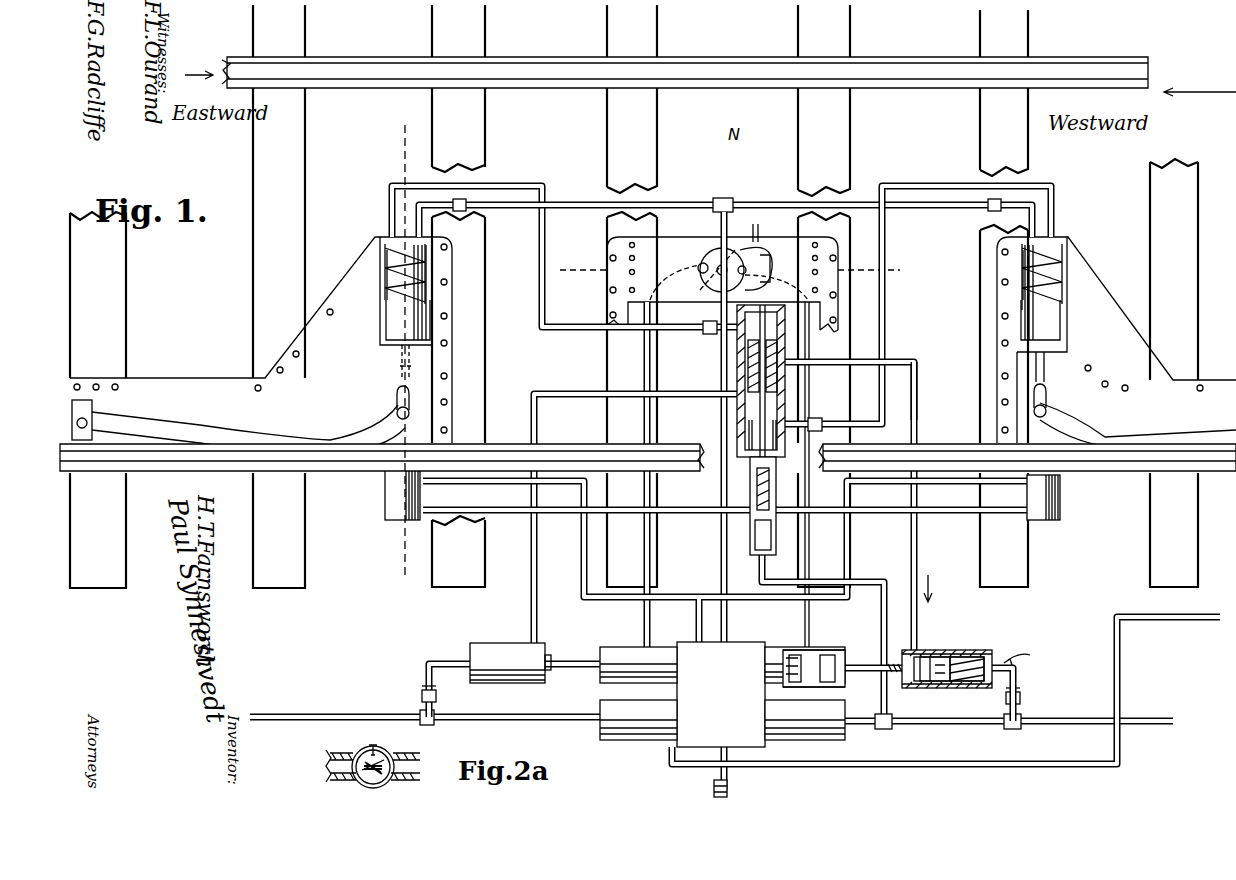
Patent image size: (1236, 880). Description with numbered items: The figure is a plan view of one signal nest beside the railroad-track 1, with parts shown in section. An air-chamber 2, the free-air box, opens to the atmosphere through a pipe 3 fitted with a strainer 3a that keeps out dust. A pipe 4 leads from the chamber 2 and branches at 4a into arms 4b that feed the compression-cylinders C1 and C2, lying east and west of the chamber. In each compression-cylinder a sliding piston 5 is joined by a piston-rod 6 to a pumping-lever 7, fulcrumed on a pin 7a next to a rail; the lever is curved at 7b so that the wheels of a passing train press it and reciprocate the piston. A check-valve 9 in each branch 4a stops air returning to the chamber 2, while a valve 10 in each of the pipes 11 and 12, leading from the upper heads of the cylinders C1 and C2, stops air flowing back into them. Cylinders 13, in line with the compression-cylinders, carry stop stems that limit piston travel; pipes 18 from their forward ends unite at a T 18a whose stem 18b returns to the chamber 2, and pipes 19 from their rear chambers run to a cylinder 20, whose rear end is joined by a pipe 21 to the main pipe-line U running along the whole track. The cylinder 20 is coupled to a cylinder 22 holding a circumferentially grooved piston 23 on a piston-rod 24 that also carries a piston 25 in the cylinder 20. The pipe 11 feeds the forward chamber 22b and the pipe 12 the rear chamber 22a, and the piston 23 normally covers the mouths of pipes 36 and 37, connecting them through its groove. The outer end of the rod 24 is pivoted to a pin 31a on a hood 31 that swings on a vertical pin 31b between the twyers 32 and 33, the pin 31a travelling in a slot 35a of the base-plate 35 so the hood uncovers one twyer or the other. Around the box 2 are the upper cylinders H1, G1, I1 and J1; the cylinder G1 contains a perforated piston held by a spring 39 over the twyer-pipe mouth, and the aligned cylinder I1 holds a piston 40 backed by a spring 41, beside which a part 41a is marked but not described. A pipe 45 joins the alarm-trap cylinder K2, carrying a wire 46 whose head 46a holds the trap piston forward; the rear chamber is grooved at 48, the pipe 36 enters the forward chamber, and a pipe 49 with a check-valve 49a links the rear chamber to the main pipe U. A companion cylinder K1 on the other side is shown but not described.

In FIG. 1, the railroad-track 1 is at (535, 58).
In FIG. 1, the air-chamber 2 is at (577, 436).
In FIG. 1, the pipe 3 is at (720, 774).
In FIG. 1, the strainer 3a is at (734, 787).
In FIG. 1, the pipe 4 is at (722, 532).
In FIG. 1, the branch 4a is at (722, 194).
In FIG. 1, the arms 4b is at (578, 212).
In FIG. 2A, the arms 4b is at (332, 760).
In FIG. 1, the sliding piston 5 is at (386, 314).
In FIG. 1, the piston-rod 6 is at (410, 363).
In FIG. 1, the pumping-lever 7 is at (296, 440).
In FIG. 1, the pin 7a is at (96, 416).
In FIG. 1, the curved portion 7b is at (378, 420).
In FIG. 1, the check-valve 9 is at (465, 208).
In FIG. 2A, the check-valve 9 is at (390, 762).
In FIG. 1, the valve 10 is at (706, 325).
In FIG. 1, the pipe 11 is at (870, 272).
In FIG. 1, the pipe 12 is at (388, 222).
In FIG. 1, the cylinders 13 is at (388, 508).
In FIG. 1, the pipes 18 is at (725, 539).
In FIG. 1, the T junction 18a is at (740, 602).
In FIG. 1, the stem of T 18b is at (696, 626).
In FIG. 1, the pipes 19 is at (516, 514).
In FIG. 1, the cylinder 20 is at (770, 500).
In FIG. 1, the pipe 21 is at (823, 635).
In FIG. 1, the cylinder 22 is at (788, 376).
In FIG. 1, the rear chamber 22a is at (788, 345).
In FIG. 1, the forward chamber 22b is at (742, 434).
In FIG. 1, the circumferential grooved piston 23 is at (745, 372).
In FIG. 1, the piston-rod 24 is at (745, 341).
In FIG. 1, the piston 25 is at (755, 496).
In FIG. 1, the hood 31 is at (712, 262).
In FIG. 1, the pin 31a is at (785, 265).
In FIG. 1, the vertical pin 31b is at (701, 294).
In FIG. 1, the twyer 32 is at (818, 612).
In FIG. 1, the twyer 33 is at (636, 560).
In FIG. 1, the base-plate 35 is at (730, 284).
In FIG. 1, the slot 35a is at (750, 230).
In FIG. 1, the pipe 36 is at (920, 428).
In FIG. 1, the pipe 37 is at (635, 505).
In FIG. 1, the spring 39 is at (838, 688).
In FIG. 1, the piston 40 is at (832, 656).
In FIG. 1, the spring 41 is at (790, 656).
In FIG. 1, the port 41a is at (808, 656).
In FIG. 1, the pipe 45 is at (862, 666).
In FIG. 1, the wire 46 is at (910, 684).
In FIG. 1, the head 46a is at (967, 680).
In FIG. 1, the groove 48 is at (975, 656).
In FIG. 1, the pipe 49 is at (1023, 687).
In FIG. 1, the check-valve 49a is at (420, 696).
In FIG. 1, the compression-cylinder C1 is at (1068, 318).
In FIG. 1, the compression-cylinder C2 is at (261, 340).
In FIG. 1, the valve K' K1 is at (510, 650).
In FIG. 1, the alarm-trap cylinder K2 is at (947, 653).
In FIG. 1, the cylinder G1 is at (618, 648).
In FIG. 1, the cylinder H1 is at (722, 734).
In FIG. 1, the cylinder I1 is at (814, 657).
In FIG. 1, the cylinder J1 is at (848, 740).
In FIG. 1, the pipe-line U is at (343, 716).